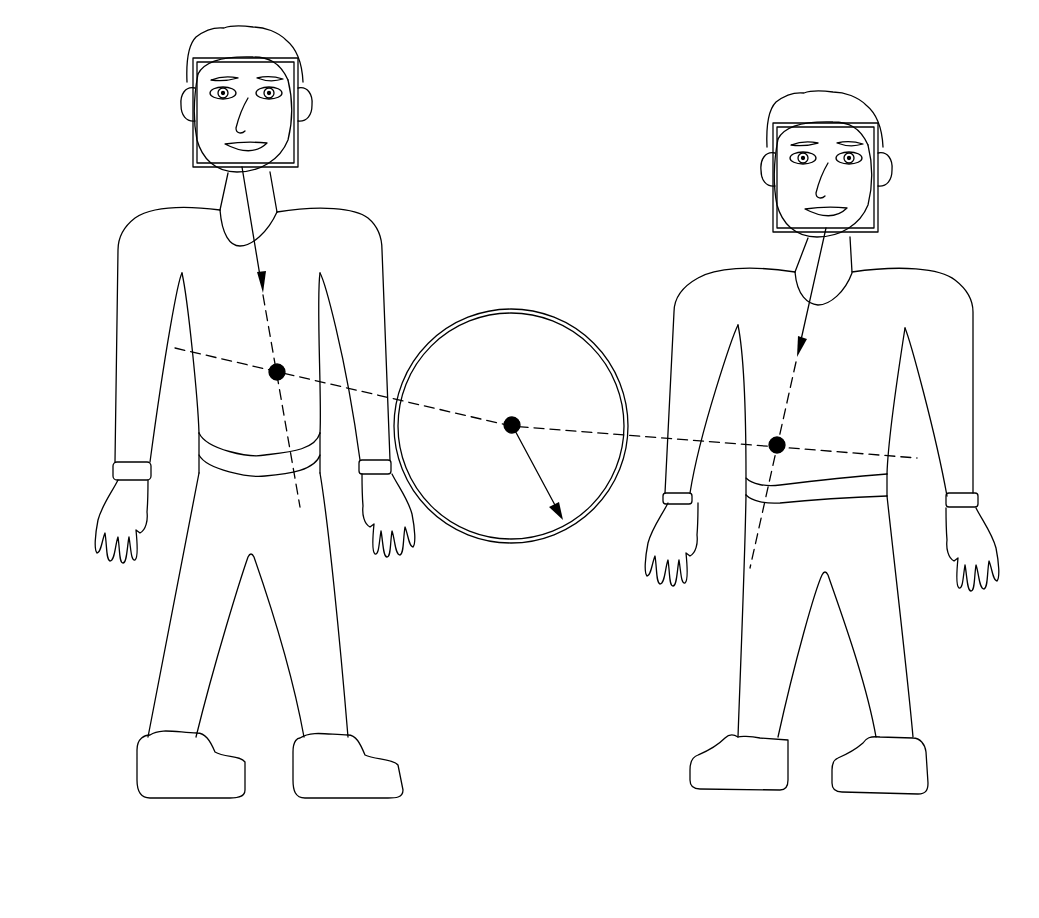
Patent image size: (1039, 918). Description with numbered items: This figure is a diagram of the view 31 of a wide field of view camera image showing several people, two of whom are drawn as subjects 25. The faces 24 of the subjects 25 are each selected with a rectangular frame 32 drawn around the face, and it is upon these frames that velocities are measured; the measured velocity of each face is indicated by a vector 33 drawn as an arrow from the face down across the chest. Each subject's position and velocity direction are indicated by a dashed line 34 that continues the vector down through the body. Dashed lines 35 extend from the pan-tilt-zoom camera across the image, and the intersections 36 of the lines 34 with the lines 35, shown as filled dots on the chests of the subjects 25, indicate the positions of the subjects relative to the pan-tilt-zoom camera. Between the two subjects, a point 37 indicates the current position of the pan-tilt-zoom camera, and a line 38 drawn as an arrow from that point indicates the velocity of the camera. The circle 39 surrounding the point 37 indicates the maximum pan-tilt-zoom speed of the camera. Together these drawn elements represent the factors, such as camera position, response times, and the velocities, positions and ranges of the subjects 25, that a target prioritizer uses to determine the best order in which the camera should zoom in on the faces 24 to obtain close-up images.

The face 24 is at (280, 130).
The subject 25 is at (398, 202).
The view 31 is at (676, 58).
The rectangular frame 32 is at (300, 60).
The vector 33 is at (266, 279).
The line 34 is at (272, 330).
The line 35 is at (580, 430).
The intersection 36 is at (274, 378).
The point 37 is at (510, 416).
The line 38 is at (540, 478).
The circle 39 is at (523, 307).